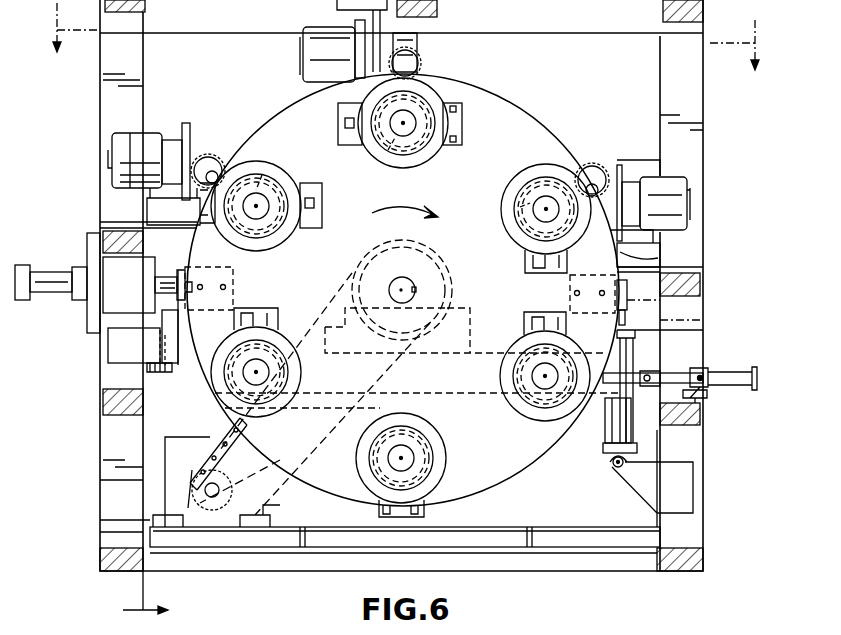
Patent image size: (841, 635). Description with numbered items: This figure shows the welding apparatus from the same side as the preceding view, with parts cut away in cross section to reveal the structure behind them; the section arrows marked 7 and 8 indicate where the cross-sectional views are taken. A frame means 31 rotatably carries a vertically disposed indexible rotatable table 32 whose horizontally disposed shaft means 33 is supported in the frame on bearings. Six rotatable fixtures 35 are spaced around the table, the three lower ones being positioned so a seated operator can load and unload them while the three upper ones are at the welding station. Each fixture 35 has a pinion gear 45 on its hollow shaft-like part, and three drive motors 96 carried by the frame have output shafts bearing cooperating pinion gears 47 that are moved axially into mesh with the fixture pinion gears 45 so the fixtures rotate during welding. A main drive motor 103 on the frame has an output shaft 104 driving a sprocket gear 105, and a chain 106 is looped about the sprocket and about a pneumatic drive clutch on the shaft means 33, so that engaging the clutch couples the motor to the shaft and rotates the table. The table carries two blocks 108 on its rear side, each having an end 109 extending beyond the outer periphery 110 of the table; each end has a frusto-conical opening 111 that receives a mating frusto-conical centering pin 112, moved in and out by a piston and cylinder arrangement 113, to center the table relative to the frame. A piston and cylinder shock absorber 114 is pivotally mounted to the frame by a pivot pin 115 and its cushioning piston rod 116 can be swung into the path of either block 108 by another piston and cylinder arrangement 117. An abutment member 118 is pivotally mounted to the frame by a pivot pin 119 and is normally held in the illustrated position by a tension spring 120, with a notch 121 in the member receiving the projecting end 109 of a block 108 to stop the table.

The section line 7- 7 is at (154, 596).
The section line 8- 8 is at (403, 48).
The frame means 31 is at (688, 112).
The rotatable table 32 is at (518, 113).
The shaft means 33 is at (390, 287).
The rotatable fixture 35 is at (433, 165).
The pinion gear 45 is at (262, 175).
The pinion gear 47 is at (213, 158).
The drive motor 96 is at (135, 145).
The main drive motor 103 is at (302, 500).
The output shaft 104 is at (212, 497).
The sprocket gear 105 is at (230, 432).
The chain 106 is at (297, 452).
The block 108 is at (233, 297).
The end 109 is at (665, 310).
The outer periphery 110 is at (640, 250).
The frusto-conical opening 111 is at (187, 265).
The centering pin 112 is at (173, 247).
The piston and cylinder arrangement 113 is at (60, 303).
The piston and cylinder shock absorber 114 is at (596, 425).
The pivot pin 115 is at (611, 466).
The cushioning piston rod 116 is at (623, 327).
The piston and cylinder arrangement 117 is at (725, 392).
The abutment member 118 is at (172, 322).
The pivot pin 119 is at (172, 347).
The tension spring 120 is at (158, 372).
The notch 121 is at (162, 299).